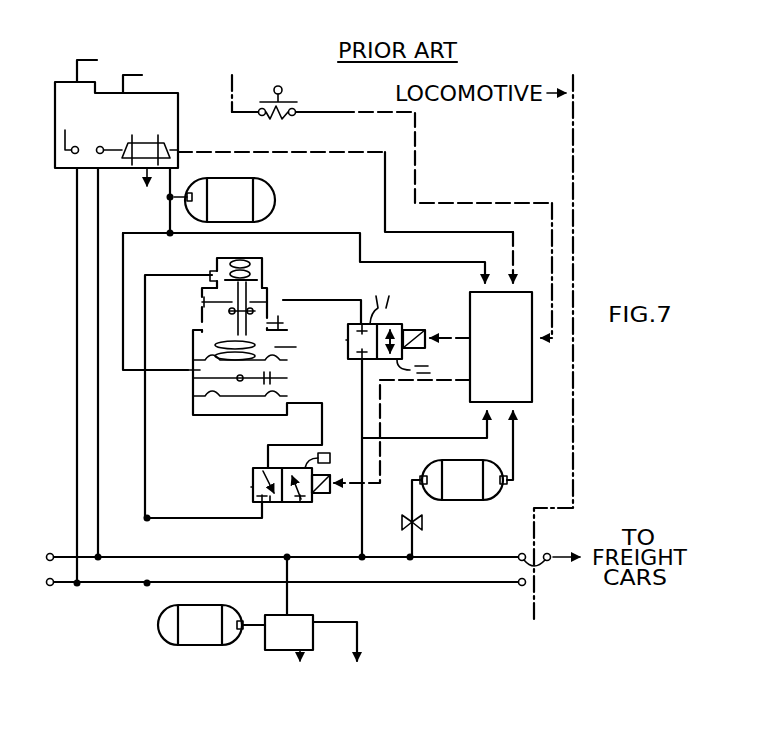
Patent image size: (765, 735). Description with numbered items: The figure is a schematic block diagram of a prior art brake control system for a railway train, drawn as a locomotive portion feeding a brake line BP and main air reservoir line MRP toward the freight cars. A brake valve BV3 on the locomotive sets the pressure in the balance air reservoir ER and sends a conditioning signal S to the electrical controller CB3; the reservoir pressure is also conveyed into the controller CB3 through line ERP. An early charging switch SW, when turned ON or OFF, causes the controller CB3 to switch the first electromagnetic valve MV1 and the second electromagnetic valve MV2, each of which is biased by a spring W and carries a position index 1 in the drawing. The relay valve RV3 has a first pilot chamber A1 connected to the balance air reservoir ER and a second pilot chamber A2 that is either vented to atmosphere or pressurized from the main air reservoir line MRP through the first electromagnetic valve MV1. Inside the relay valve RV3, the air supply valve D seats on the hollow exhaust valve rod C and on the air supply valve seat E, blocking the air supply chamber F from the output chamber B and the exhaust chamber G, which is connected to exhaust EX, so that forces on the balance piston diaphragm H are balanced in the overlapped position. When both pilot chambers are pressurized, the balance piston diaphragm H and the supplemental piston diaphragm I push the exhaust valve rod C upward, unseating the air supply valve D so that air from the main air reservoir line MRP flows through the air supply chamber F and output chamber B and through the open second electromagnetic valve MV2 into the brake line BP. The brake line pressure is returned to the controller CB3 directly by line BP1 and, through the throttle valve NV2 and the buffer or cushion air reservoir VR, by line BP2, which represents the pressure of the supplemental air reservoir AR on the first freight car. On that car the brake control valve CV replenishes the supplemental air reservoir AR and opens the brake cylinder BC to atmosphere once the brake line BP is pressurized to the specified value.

The brake valve BV3 is at (152, 82).
The early charging switch SW is at (285, 100).
The conditioning signal S is at (327, 150).
The balance air reservoir ER is at (224, 200).
The line ERP is at (462, 258).
The electrical controller CB3 is at (501, 347).
The second electromagnetic valve MV2 is at (410, 330).
The spring W is at (294, 415).
The air supply chamber F is at (218, 264).
The air supply valve D is at (261, 262).
The air supply valve seat E is at (262, 288).
The output chamber B is at (281, 301).
The hollow exhaust valve rod C is at (204, 305).
The exhaust chamber G is at (284, 326).
The exhaust EX is at (202, 326).
The balance piston diaphragm H is at (193, 366).
The first pilot chamber A1 is at (299, 378).
The supplemental piston diaphragm I is at (193, 400).
The relay valve RV3 is at (210, 425).
The second pilot chamber A2 is at (237, 404).
The first electromagnetic valve MV1 is at (322, 495).
The spring seat 1 is at (253, 497).
The brake line BP is at (332, 556).
The line BP1 is at (483, 431).
The line BP2 is at (515, 451).
The buffer or cushion air reservoir VR is at (463, 480).
The throttle valve NV2 is at (430, 522).
The main air reservoir line MRP is at (443, 585).
The supplemental air reservoir AR is at (211, 625).
The brake control valve CV is at (289, 603).
The brake cylinder BC is at (345, 660).